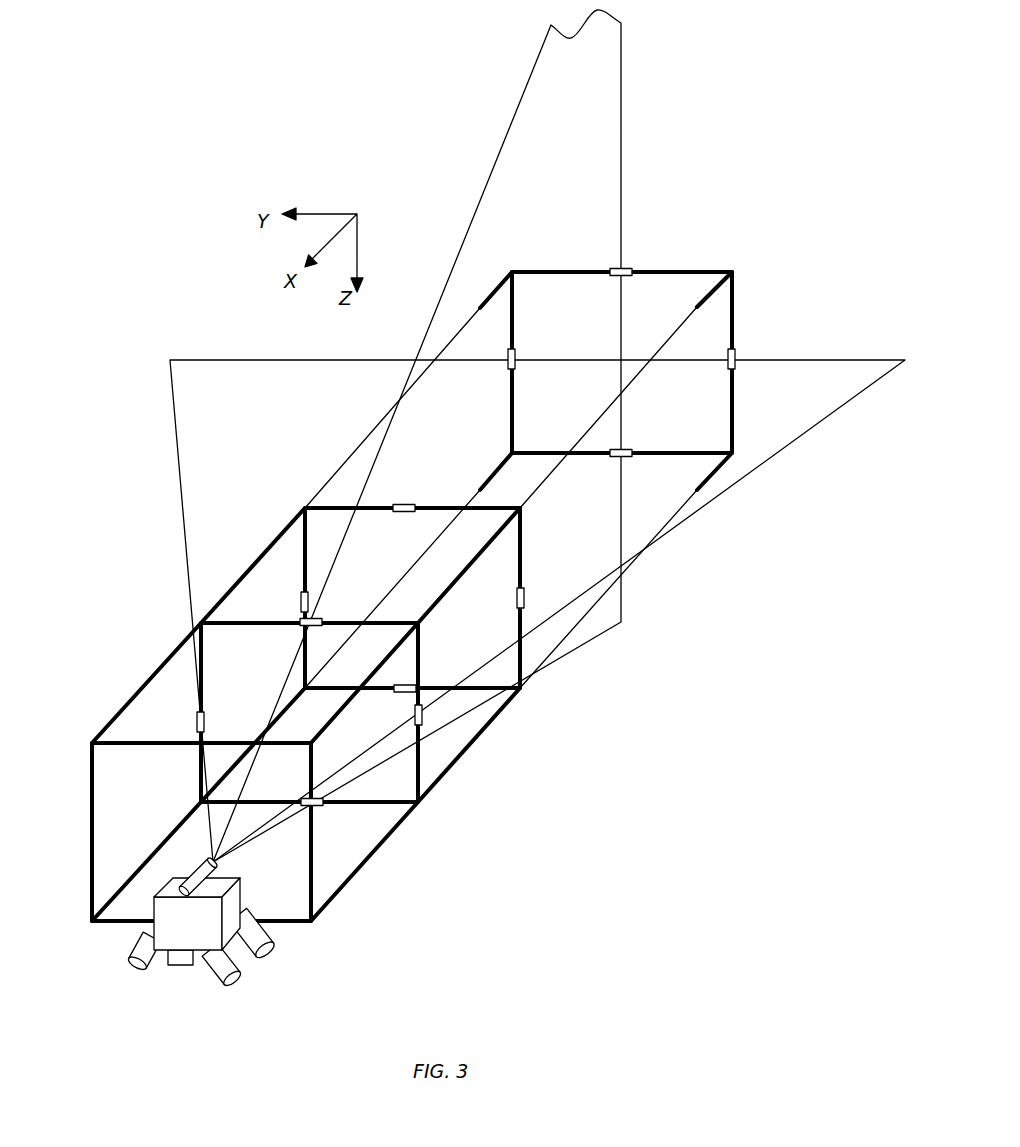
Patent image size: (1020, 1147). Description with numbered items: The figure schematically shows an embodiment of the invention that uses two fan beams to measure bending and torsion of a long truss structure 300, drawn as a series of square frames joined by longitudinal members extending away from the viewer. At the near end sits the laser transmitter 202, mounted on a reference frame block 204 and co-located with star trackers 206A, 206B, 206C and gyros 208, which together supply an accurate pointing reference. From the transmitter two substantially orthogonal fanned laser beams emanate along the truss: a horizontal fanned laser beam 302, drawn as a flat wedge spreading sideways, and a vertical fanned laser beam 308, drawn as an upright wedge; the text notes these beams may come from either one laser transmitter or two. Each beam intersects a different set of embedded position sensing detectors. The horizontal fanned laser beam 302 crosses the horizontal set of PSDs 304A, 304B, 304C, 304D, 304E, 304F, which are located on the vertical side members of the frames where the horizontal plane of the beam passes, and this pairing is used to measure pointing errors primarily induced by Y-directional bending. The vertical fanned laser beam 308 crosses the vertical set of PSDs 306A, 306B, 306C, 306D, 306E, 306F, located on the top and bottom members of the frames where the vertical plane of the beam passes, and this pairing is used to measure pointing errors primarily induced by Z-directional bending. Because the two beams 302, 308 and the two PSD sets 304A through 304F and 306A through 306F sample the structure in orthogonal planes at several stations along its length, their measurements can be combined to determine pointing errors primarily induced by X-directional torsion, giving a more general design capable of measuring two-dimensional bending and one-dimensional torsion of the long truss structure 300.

The laser transmitter 202 is at (183, 928).
The reference frame block 204 is at (173, 937).
The star tracker 206A is at (263, 940).
The star tracker 206B is at (233, 978).
The star tracker 206C is at (135, 947).
The gyros 208 is at (180, 966).
The long truss structure 300 is at (702, 260).
The horizontal fanned laser beam 302 is at (714, 500).
The horizontal set PSD 304A is at (198, 716).
The horizontal set PSD 304B is at (422, 726).
The horizontal set PSD 304C is at (300, 598).
The horizontal set PSD 304D is at (523, 608).
The horizontal set PSD 304E is at (508, 366).
The horizontal set PSD 304F is at (736, 350).
The vertical set PSD 306A is at (302, 626).
The vertical set PSD 306B is at (315, 806).
The vertical set PSD 306C is at (403, 504).
The vertical set PSD 306D is at (406, 693).
The vertical set PSD 306E is at (616, 268).
The vertical set PSD 306F is at (619, 460).
The vertical fanned laser beam 308 is at (624, 605).